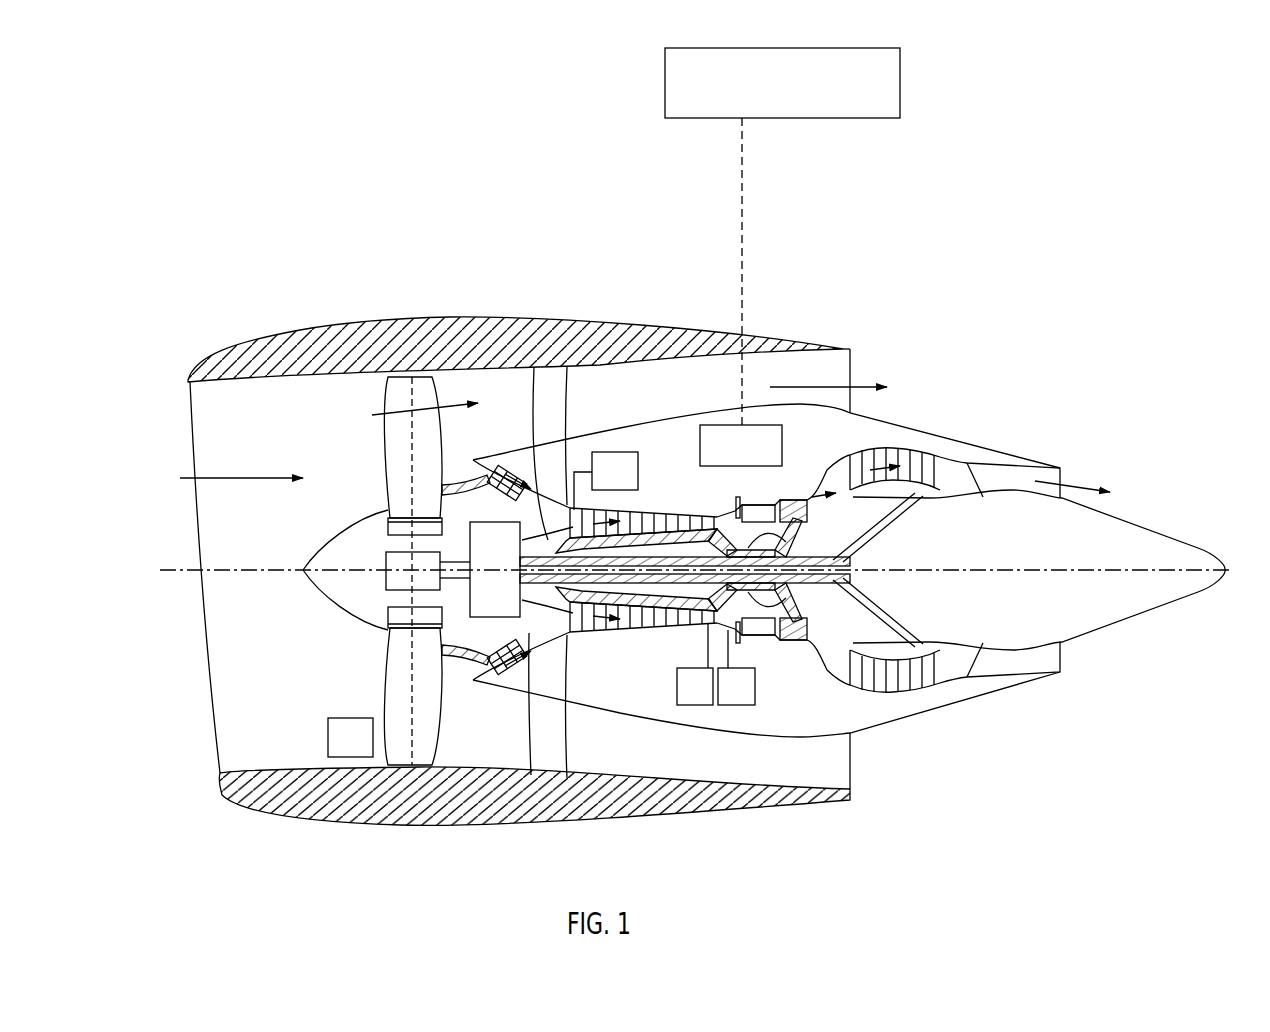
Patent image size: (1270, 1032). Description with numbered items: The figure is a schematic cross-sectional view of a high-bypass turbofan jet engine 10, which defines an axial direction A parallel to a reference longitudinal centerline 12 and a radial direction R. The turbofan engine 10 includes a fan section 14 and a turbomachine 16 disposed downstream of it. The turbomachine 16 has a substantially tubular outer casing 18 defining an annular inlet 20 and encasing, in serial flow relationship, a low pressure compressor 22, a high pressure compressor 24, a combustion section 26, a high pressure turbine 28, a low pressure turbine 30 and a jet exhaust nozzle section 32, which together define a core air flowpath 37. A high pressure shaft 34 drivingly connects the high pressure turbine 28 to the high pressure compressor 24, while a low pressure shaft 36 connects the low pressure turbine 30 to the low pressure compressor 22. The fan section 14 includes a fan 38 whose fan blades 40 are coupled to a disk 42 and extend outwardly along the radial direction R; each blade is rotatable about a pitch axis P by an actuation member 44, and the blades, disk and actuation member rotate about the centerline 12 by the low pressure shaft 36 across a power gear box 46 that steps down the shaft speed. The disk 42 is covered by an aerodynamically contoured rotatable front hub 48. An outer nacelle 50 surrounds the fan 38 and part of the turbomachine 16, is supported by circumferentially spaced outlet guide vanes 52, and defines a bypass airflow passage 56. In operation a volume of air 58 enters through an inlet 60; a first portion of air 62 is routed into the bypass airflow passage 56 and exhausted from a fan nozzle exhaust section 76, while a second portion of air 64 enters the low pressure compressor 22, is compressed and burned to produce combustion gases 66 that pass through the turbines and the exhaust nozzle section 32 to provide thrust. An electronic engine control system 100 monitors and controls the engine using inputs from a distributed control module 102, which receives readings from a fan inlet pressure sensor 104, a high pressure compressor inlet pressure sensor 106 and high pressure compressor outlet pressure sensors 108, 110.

The turbofan jet engine 10 is at (982, 322).
The longitudinal centerline 12 is at (1005, 567).
The fan section 14 is at (292, 411).
The turbomachine 16 is at (673, 457).
The outer casing 18 is at (713, 724).
The annular inlet 20 is at (483, 670).
The low pressure compressor 22 is at (528, 645).
The high pressure compressor 24 is at (593, 624).
The combustion section 26 is at (760, 640).
The high pressure turbine 28 is at (815, 637).
The low pressure turbine 30 is at (926, 692).
The jet exhaust nozzle section 32 is at (985, 678).
The high pressure shaft 34 is at (790, 530).
The low pressure shaft 36 is at (880, 538).
The core air flowpath 37 is at (555, 632).
The fan 38 is at (352, 621).
The fan blades 40 is at (388, 711).
The disk 42 is at (405, 529).
The actuation member 44 is at (386, 557).
The power gear box 46 is at (510, 540).
The rotatable front hub 48 is at (318, 590).
The outer nacelle 50 is at (430, 828).
The outlet guide vanes 52 is at (568, 393).
The bypass airflow passage 56 is at (712, 396).
The volume of air 58 is at (237, 477).
The inlet 60 is at (220, 778).
The first portion of air 62 is at (402, 404).
The second portion of air 64 is at (460, 471).
The combustion gases 66 is at (887, 460).
The fan nozzle exhaust section 76 is at (840, 372).
The electronic engine control system 100 is at (822, 49).
The distributed control module 102 is at (765, 424).
The fan inlet pressure sensor 104 is at (337, 758).
The high pressure compressor inlet pressure sensor 106 is at (617, 451).
The high pressure compressor outlet pressure sensor 108 is at (690, 707).
The high pressure compressor outlet pressure sensor 110 is at (736, 707).
The pitch axis P is at (428, 385).
The radial direction R is at (118, 434).
The axial direction A is at (750, 881).